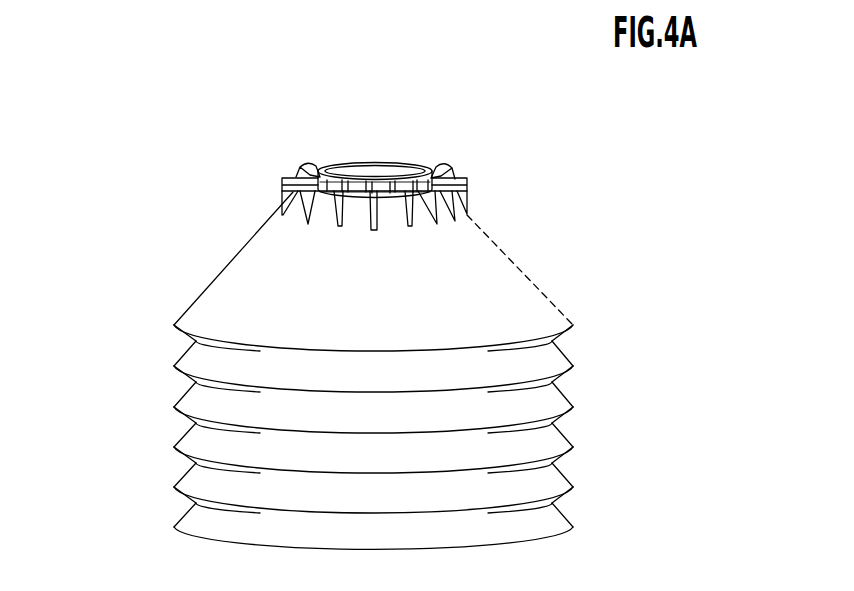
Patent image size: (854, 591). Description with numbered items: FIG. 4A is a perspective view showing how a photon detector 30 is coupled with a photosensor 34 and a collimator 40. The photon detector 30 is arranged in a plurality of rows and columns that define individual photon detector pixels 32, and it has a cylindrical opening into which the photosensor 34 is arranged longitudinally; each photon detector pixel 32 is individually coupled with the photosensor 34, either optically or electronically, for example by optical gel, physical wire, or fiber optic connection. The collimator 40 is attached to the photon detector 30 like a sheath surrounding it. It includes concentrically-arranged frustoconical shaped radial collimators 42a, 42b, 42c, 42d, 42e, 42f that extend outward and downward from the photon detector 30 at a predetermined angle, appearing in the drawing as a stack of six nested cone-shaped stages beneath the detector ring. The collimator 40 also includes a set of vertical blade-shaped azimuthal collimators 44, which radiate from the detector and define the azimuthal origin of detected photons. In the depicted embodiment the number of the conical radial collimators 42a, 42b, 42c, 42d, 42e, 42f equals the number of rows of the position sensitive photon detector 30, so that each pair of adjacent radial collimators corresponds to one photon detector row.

The photon detector 30 is at (398, 168).
The photon detector pixel 32 is at (293, 173).
The photosensor 34 is at (377, 170).
The collimator 40 is at (170, 151).
The azimuthal collimators 44 is at (461, 178).
The radial collimator 42a is at (197, 300).
The radial collimator 42b is at (198, 346).
The radial collimator 42c is at (197, 387).
The radial collimator 42d is at (180, 432).
The radial collimator 42e is at (180, 470).
The radial collimator 42f is at (180, 506).